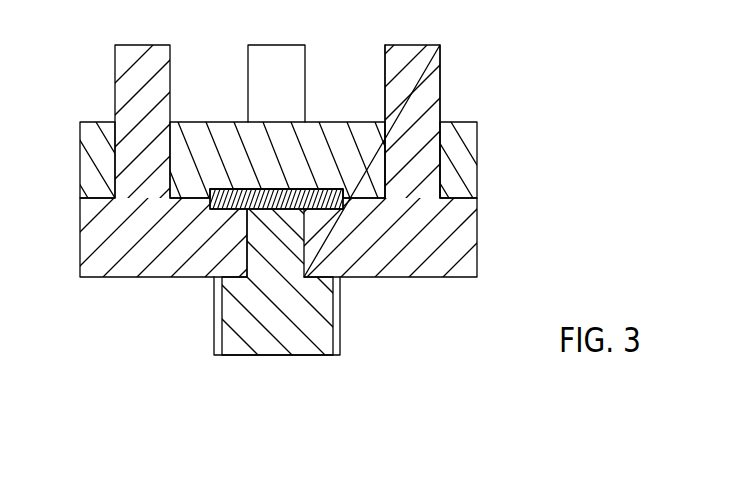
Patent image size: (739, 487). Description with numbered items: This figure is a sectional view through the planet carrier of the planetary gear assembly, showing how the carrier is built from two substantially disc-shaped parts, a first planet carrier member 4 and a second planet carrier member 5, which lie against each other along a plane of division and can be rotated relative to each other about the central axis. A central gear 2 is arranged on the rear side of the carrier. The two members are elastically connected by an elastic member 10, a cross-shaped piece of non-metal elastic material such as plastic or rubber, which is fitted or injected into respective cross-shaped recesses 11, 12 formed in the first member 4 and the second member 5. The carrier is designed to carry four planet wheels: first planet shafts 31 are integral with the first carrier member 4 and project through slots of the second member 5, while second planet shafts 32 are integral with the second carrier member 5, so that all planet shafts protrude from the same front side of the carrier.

The central gear 2 is at (297, 337).
The first planet carrier member 4 is at (463, 236).
The second planet carrier member 5 is at (472, 168).
The elastic member 10 is at (308, 193).
The cross-shaped recess 11 is at (323, 208).
The cross-shaped recess 12 is at (228, 188).
The first planet shaft 31 is at (438, 62).
The second planet shaft 32 is at (263, 53).